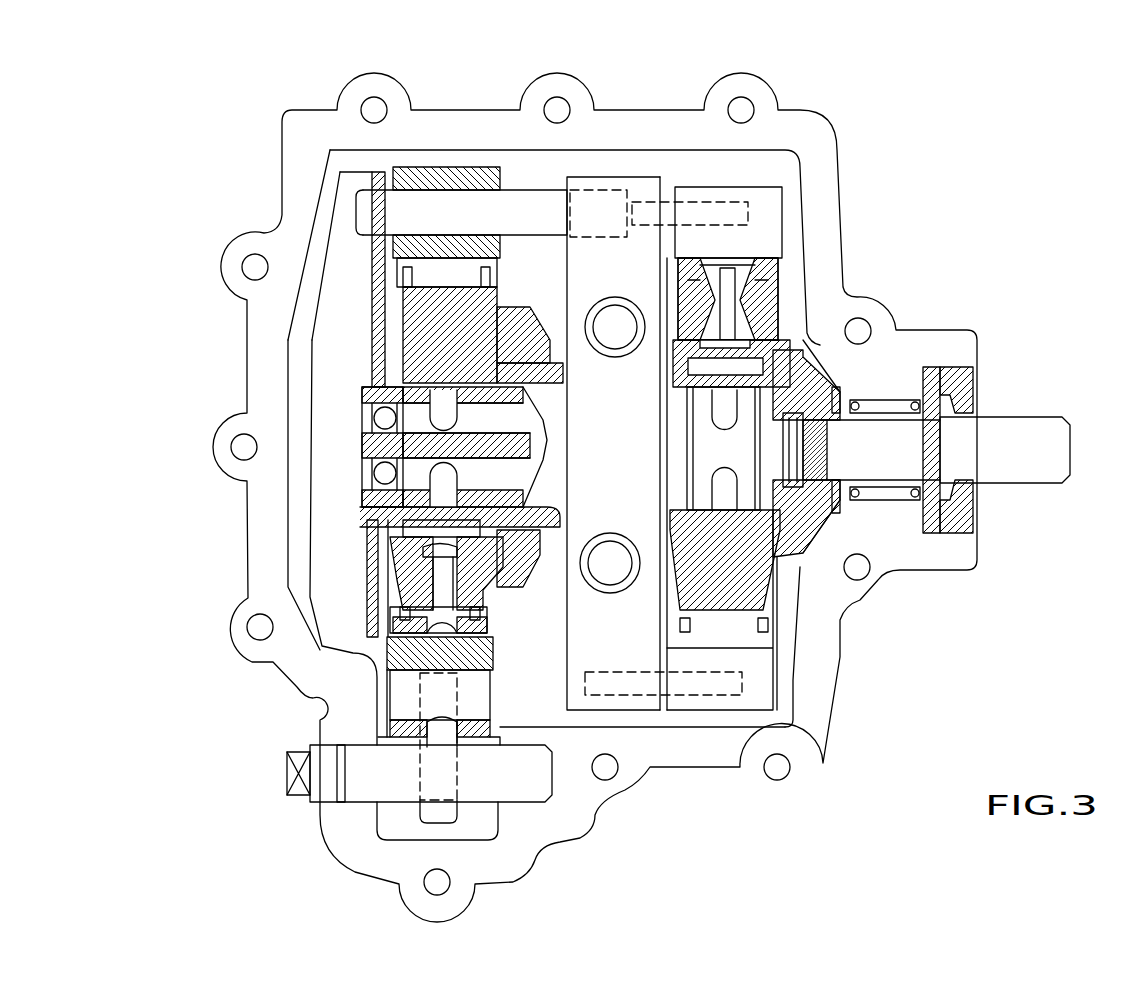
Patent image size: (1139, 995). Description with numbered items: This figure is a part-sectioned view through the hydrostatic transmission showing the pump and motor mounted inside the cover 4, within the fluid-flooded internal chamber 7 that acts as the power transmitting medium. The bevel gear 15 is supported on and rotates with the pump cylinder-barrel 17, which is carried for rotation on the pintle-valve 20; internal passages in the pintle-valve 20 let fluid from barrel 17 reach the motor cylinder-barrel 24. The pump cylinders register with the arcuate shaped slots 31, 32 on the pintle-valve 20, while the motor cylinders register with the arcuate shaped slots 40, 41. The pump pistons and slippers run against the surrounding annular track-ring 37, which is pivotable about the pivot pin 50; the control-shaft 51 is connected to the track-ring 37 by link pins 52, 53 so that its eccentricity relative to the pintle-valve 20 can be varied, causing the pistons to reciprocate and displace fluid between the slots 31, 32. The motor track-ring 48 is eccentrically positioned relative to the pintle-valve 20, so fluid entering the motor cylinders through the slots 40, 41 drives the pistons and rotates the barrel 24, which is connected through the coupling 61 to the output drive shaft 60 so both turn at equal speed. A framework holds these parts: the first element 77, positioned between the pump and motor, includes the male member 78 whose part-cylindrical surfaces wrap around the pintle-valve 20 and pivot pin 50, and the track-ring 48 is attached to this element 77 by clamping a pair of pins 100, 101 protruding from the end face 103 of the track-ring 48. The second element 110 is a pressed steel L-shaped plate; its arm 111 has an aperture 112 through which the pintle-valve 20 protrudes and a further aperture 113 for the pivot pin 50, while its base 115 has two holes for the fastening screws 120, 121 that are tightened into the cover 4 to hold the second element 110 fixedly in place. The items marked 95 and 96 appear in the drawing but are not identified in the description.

The cover 4 is at (299, 178).
The internal chamber 7 is at (530, 704).
The bevel gear 15 is at (513, 323).
The cylinder-barrel 17 is at (447, 327).
The pintle-valve 20 is at (523, 540).
The cylinder-barrel 24 is at (723, 410).
The arcuate shaped slot 31 is at (443, 403).
The arcuate shaped slot 32 is at (440, 487).
The track-ring 37 is at (427, 180).
The arcuate shaped slot 40 is at (790, 362).
The arcuate shaped slot 41 is at (800, 513).
The track-ring 48 is at (760, 230).
The pivot pin 50 is at (472, 226).
The control-shaft 51 is at (390, 782).
The link pin 52 is at (435, 808).
The link pin 53 is at (407, 697).
The output drive shaft 60 is at (1038, 459).
The coupling 61 is at (845, 385).
The first element 77 is at (655, 755).
The male member 78 is at (626, 456).
The bolt 95 is at (630, 341).
The bolt 96 is at (625, 577).
The pin 100 is at (667, 683).
The pin 101 is at (670, 213).
The end face 103 is at (673, 225).
The second element 110 is at (300, 407).
The arm 111 is at (370, 512).
The aperture 112 is at (360, 395).
The aperture 113 is at (363, 197).
The base 115 is at (352, 486).
The fastening screw 120 is at (325, 300).
The fastening screw 121 is at (357, 607).